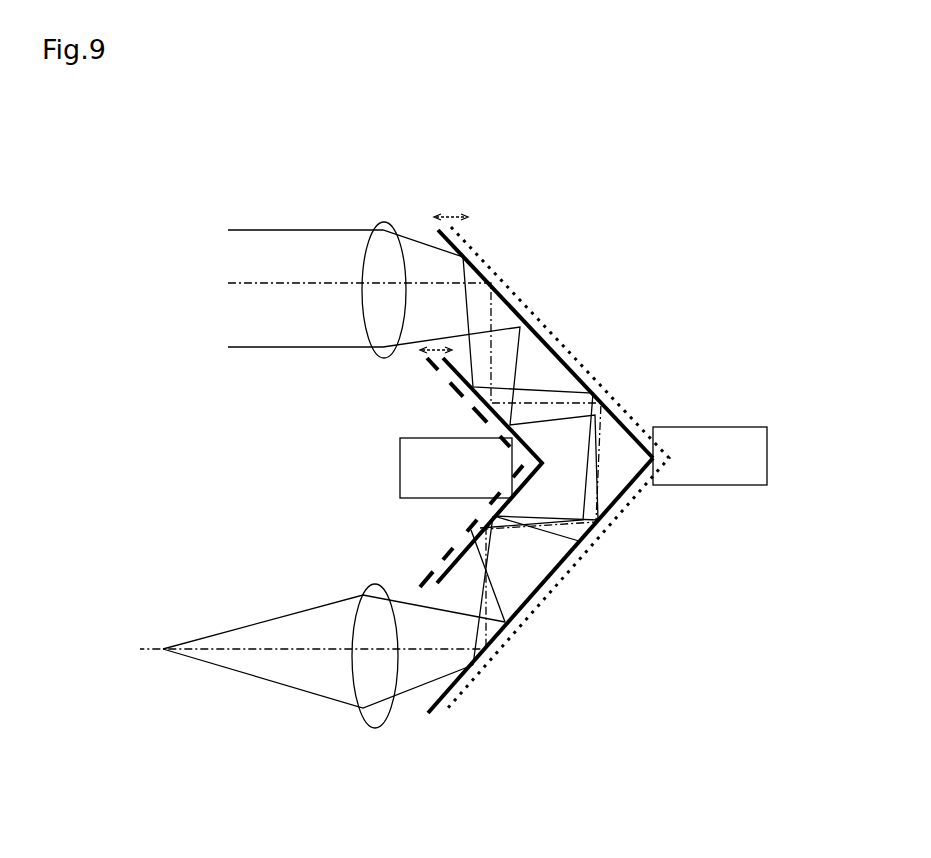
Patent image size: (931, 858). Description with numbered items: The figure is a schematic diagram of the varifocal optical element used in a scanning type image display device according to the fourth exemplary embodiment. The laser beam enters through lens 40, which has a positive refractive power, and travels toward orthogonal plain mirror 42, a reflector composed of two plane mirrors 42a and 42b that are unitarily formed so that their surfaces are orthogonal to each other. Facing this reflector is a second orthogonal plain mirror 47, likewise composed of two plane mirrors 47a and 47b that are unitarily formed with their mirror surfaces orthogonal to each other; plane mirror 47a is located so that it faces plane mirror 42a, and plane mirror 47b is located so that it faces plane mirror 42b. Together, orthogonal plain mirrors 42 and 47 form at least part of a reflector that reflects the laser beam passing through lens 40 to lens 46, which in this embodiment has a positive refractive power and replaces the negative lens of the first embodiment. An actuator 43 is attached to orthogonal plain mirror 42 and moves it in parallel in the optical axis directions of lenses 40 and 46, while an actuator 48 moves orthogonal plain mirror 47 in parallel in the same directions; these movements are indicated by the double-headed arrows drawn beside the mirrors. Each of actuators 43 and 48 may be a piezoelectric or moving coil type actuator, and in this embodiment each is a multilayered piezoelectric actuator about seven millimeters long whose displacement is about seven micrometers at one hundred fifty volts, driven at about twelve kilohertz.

The lens 40 is at (383, 222).
The orthogonal plain mirror 42 is at (590, 343).
The plane mirror 42a is at (482, 260).
The plane mirror 42b is at (563, 573).
The actuator 43 is at (738, 447).
The lens 46 is at (380, 720).
The orthogonal plain mirror 47 is at (448, 400).
The plane mirror 47a is at (447, 385).
The plane mirror 47b is at (445, 550).
The actuator 48 is at (400, 470).